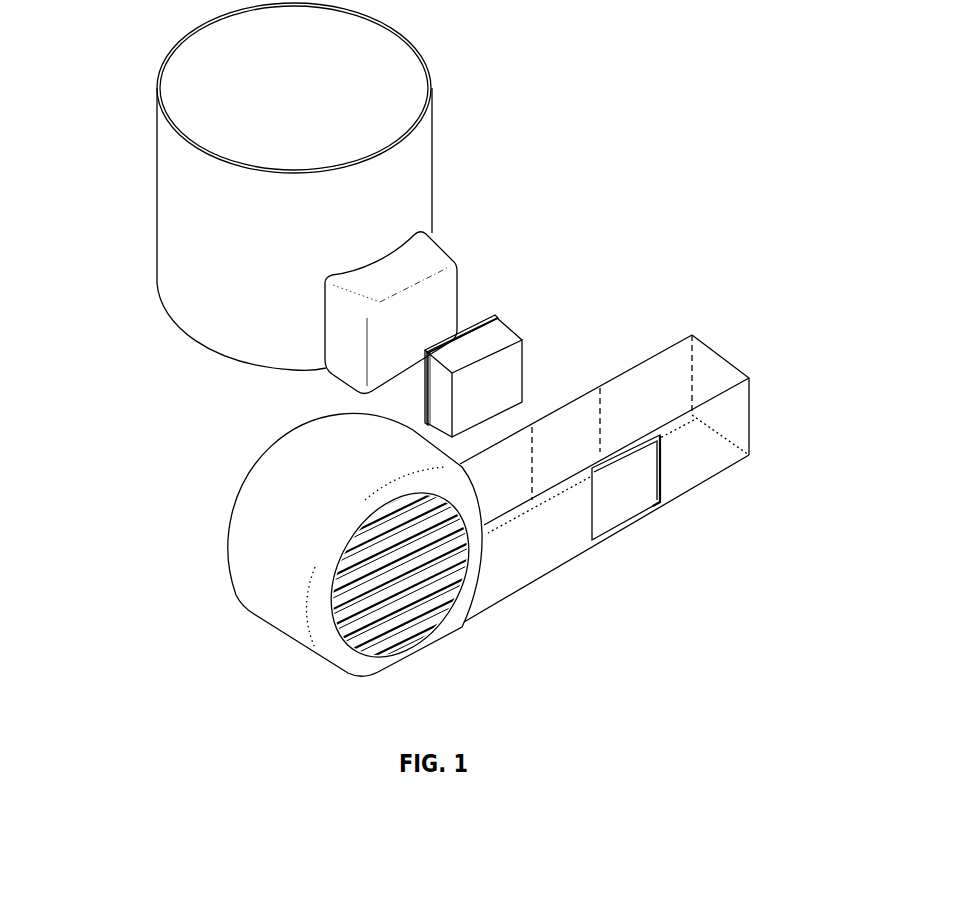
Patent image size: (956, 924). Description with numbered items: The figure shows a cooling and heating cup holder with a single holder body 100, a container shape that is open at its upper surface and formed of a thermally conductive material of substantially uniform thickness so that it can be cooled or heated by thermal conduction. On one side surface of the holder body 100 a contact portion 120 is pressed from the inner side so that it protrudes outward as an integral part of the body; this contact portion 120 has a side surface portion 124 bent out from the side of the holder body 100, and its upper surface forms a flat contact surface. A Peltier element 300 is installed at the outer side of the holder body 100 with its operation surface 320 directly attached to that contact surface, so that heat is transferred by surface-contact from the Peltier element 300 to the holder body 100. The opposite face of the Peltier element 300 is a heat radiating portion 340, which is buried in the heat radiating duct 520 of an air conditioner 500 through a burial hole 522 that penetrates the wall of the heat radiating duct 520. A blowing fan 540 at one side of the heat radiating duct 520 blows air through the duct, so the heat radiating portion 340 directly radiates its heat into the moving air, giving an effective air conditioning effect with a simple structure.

The holder body 100 is at (168, 192).
The contact portion 120 is at (350, 284).
The side surface portion 124 is at (417, 258).
The Peltier element 300 is at (541, 333).
The operation surface 320 is at (493, 315).
The heat radiating portion 340 is at (505, 337).
The air conditioner 500 is at (474, 530).
The heat radiating duct 520 is at (708, 462).
The burial hole 522 is at (567, 440).
The blowing fan 540 is at (246, 631).